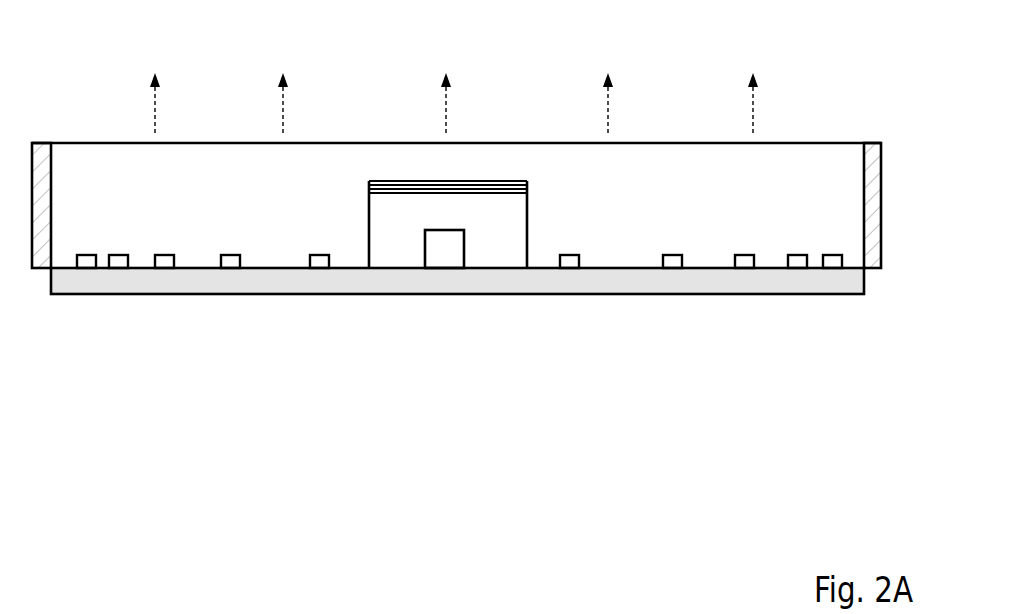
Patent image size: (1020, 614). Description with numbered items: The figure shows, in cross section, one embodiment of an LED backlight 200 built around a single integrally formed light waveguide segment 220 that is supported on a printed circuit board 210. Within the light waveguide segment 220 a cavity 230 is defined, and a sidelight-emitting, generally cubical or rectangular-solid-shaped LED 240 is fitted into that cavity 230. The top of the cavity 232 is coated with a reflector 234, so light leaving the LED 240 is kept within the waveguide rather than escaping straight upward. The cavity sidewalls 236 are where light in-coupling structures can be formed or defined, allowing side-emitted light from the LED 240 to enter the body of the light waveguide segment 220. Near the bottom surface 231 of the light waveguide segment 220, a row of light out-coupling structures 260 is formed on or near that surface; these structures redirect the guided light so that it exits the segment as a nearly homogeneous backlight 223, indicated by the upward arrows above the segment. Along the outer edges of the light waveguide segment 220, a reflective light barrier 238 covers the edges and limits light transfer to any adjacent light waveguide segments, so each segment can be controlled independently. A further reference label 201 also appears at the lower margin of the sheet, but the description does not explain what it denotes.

The LED backlight 200 is at (113, 65).
The light emitting device (alternate) 201 is at (118, 613).
The printed circuit board 210 is at (690, 295).
The light waveguide segment 220 is at (790, 142).
The backlight 223 is at (450, 99).
The cavity 230 is at (482, 245).
The bottom surface 231 is at (137, 266).
The top of the cavity 232 is at (368, 181).
The reflector 234 is at (417, 200).
The cavity sidewalls 236 is at (527, 212).
The reflective light barrier 238 is at (870, 192).
The LED 240 is at (441, 250).
The light out-coupling structures 260 is at (182, 261).